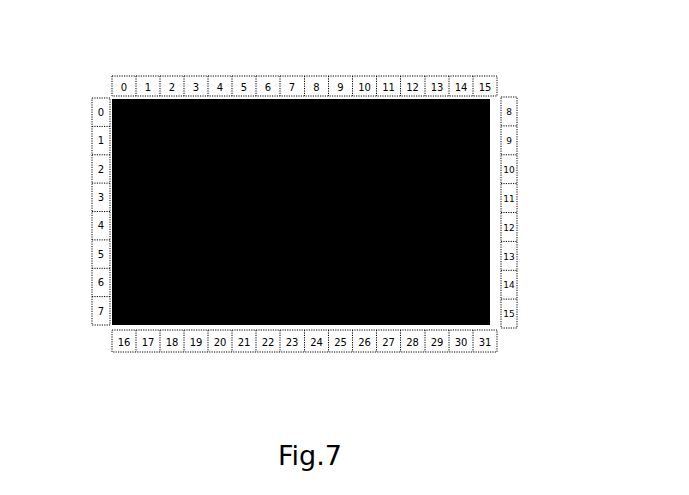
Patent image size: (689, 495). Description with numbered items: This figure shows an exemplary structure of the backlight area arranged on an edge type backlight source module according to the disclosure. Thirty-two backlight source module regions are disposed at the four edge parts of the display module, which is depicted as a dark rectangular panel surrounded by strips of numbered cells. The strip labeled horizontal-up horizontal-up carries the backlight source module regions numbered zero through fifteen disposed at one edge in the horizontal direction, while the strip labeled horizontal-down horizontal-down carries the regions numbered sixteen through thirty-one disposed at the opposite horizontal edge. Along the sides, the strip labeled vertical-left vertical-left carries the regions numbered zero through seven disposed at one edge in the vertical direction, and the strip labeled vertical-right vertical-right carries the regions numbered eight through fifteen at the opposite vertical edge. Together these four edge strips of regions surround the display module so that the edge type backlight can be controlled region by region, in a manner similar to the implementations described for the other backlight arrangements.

The horizontal-up touch sensor row horizontal-up is at (311, 75).
The horizontal-down touch sensor row horizontal-down is at (317, 351).
The vertical-left touch sensor column vertical-left is at (92, 228).
The vertical-right touch sensor column vertical-right is at (555, 212).